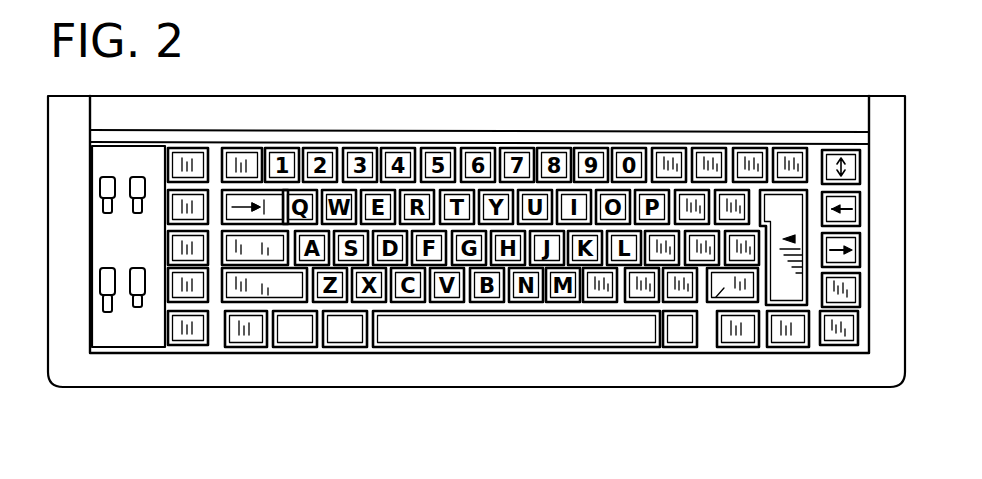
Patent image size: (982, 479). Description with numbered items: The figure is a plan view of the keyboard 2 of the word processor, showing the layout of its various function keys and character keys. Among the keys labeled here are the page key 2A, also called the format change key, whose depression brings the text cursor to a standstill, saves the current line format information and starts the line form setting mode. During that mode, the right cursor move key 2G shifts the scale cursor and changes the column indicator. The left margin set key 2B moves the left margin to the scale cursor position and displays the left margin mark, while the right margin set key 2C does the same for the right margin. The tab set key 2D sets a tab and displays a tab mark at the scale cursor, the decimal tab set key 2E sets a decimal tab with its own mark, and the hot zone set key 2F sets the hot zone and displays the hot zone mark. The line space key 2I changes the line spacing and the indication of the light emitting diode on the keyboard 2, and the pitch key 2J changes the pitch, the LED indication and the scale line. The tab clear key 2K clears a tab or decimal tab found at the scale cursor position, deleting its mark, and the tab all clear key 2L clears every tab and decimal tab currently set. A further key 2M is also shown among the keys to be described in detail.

The keyboard 2 is at (518, 96).
The page key 2A is at (250, 327).
The left margin set key 2B is at (295, 327).
The right margin set key 2C is at (343, 327).
The tab set key 2D is at (682, 333).
The decimal tab set key 2E is at (752, 168).
The hot zone set key 2F is at (793, 162).
The right cursor move key 2G is at (846, 168).
The line space key 2I is at (853, 290).
The pitch key 2J is at (837, 333).
The tab clear key 2K is at (783, 333).
The tab all clear key 2L is at (735, 333).
The key 2M is at (720, 290).